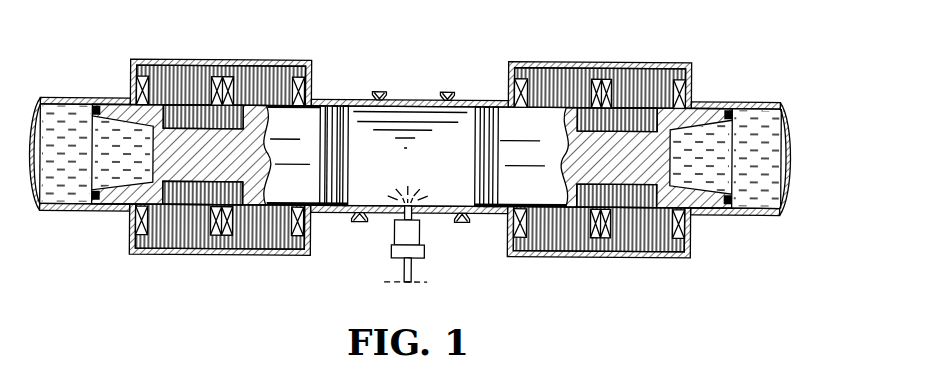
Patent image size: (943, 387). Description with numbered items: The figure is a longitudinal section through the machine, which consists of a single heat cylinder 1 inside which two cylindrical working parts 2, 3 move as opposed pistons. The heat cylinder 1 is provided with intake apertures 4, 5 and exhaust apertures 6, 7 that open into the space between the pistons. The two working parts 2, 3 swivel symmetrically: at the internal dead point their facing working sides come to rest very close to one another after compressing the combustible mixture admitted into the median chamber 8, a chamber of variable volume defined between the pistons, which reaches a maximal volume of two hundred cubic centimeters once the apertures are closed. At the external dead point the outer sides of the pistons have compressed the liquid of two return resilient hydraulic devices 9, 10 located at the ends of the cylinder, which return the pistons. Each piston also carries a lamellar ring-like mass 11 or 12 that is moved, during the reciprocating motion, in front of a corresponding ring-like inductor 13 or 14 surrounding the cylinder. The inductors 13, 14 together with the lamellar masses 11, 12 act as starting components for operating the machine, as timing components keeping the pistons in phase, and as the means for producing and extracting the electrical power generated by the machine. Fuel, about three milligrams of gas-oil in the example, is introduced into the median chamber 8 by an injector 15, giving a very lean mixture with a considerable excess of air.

The heat cylinder 1 is at (418, 92).
The cylindrical working part 2 is at (262, 108).
The cylindrical working part 3 is at (563, 133).
The intake aperture 4 is at (357, 223).
The intake aperture 5 is at (463, 223).
The exhaust aperture 6 is at (378, 92).
The exhaust aperture 7 is at (446, 92).
The median chamber 8 is at (443, 170).
The return resilient hydraulic device 9 is at (110, 130).
The return resilient hydraulic device 10 is at (757, 117).
The lamellar ring-like mass 11 is at (195, 118).
The lamellar ring-like mass 12 is at (638, 200).
The ring-like inductor 13 is at (198, 243).
The ring-like inductor 14 is at (652, 76).
The injector 15 is at (405, 250).